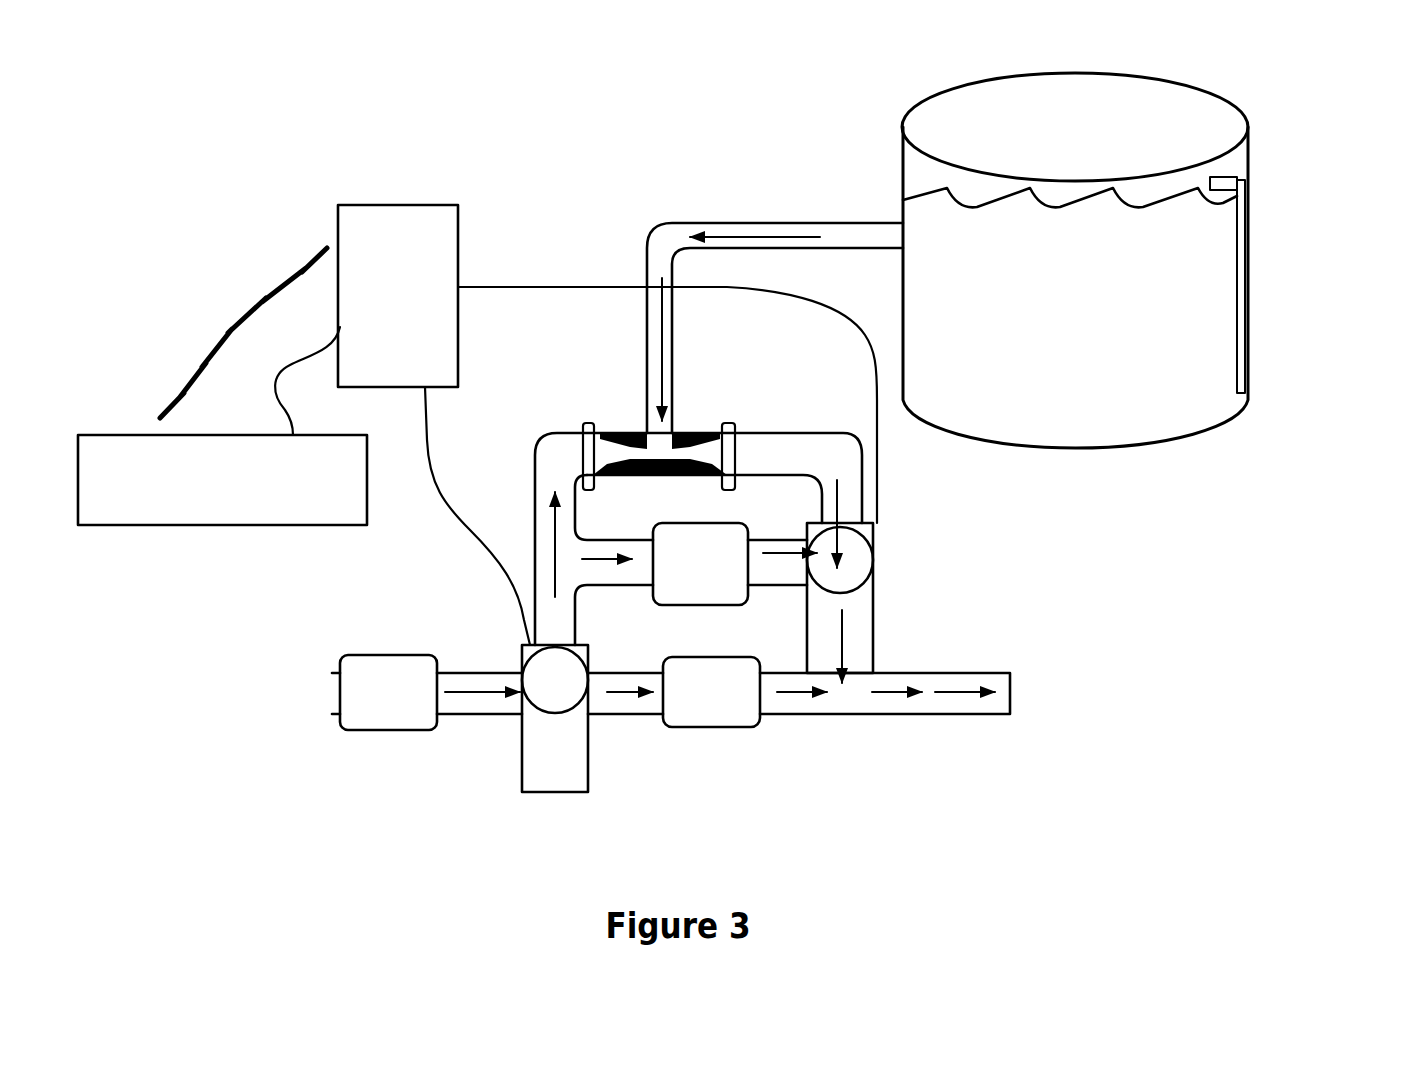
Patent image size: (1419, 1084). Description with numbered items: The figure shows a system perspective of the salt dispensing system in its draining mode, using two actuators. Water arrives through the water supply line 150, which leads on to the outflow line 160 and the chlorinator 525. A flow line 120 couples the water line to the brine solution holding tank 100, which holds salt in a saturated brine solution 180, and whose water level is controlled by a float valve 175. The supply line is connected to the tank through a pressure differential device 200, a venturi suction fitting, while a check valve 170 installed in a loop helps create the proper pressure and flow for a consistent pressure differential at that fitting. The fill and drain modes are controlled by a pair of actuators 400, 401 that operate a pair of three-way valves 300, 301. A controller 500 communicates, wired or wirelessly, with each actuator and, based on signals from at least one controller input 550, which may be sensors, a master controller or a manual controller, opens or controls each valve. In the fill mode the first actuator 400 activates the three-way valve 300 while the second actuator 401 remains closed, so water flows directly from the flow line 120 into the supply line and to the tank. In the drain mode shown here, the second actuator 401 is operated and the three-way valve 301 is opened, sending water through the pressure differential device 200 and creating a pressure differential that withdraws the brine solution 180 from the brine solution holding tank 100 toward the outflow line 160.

The brine solution holding tank 100 is at (1250, 400).
The flow line 120 is at (675, 222).
The water supply line 150 is at (453, 668).
The outflow line 160 is at (1003, 714).
The check valve 170 is at (763, 573).
The float valve 175 is at (1252, 238).
The brine solution 180 is at (898, 194).
The pressure differential device 200 is at (633, 432).
The three-way valve 300 is at (523, 790).
The three-way valve 301 is at (878, 557).
The actuator 400 is at (523, 698).
The actuator 401 is at (880, 540).
The controller 500 is at (455, 198).
The chlorinator 525 is at (392, 730).
The controller input 550 is at (188, 525).